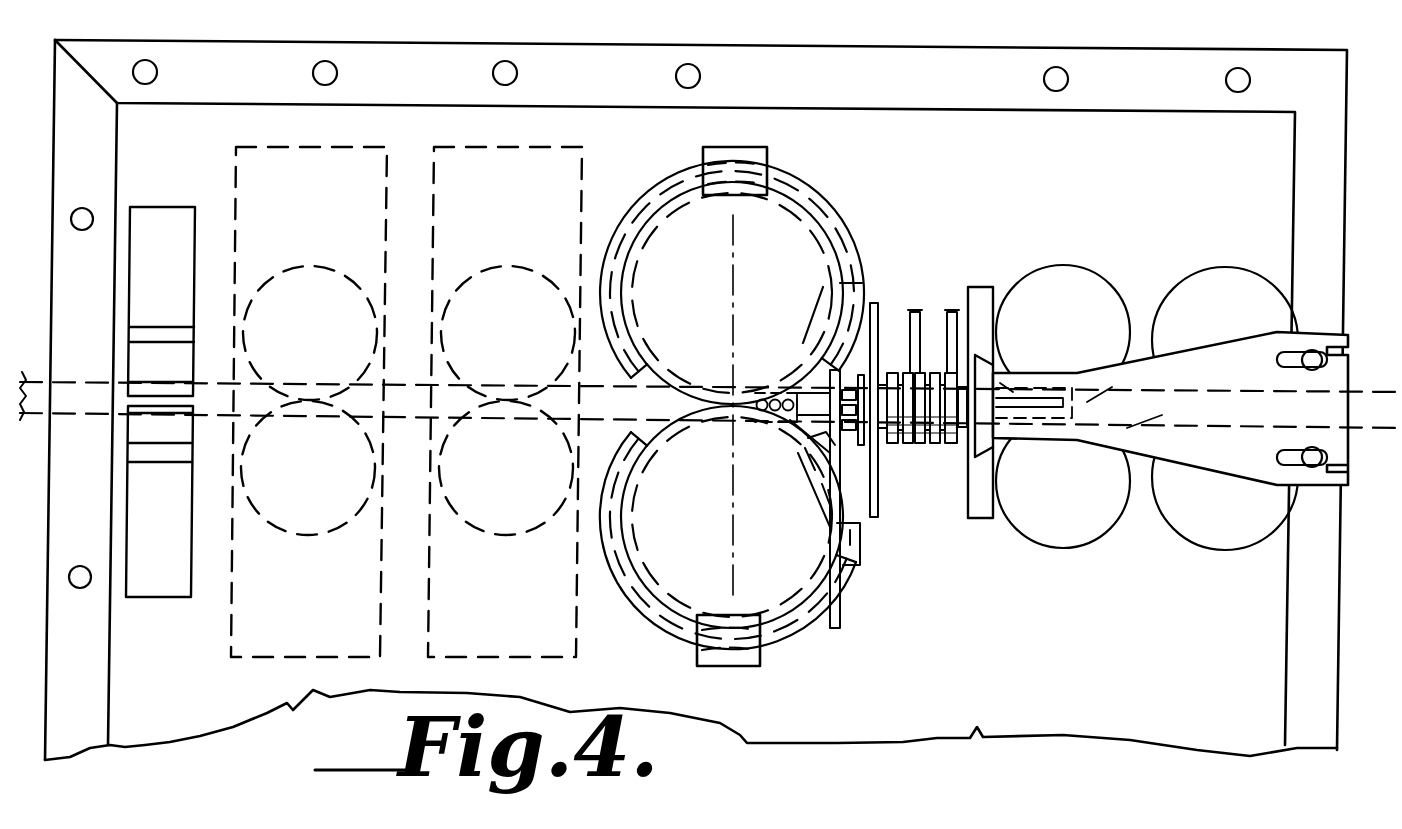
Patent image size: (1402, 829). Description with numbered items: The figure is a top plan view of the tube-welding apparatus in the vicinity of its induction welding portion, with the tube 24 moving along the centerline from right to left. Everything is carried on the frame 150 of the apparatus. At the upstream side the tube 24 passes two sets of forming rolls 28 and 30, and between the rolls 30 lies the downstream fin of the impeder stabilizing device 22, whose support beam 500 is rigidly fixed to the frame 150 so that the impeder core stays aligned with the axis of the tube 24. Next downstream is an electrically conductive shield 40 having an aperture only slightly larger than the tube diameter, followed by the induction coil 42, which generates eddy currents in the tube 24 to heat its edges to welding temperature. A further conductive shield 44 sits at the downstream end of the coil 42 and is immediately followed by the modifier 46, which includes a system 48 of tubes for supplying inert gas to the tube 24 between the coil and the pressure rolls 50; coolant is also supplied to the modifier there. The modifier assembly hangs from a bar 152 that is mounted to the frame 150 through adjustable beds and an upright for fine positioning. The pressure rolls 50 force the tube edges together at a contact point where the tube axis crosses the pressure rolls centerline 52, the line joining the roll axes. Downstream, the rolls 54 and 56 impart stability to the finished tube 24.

The frame 150 is at (935, 48).
The tube 24 is at (610, 385).
The rolls 56 is at (328, 250).
The rolls 54 is at (523, 245).
The pressure rolls 50 is at (780, 217).
The pressure rolls centerline 52 is at (737, 265).
The system of tubes 48 is at (755, 427).
The modifier 46 is at (823, 422).
The bar 152 is at (836, 615).
The shield 44 is at (876, 517).
The induction coil 42 is at (920, 468).
The shield 40 is at (966, 520).
The forming rolls 30 is at (1095, 255).
The forming rolls 28 is at (1225, 550).
The impeder stabilizing device 22 is at (1193, 336).
The support beam 500 is at (1258, 322).